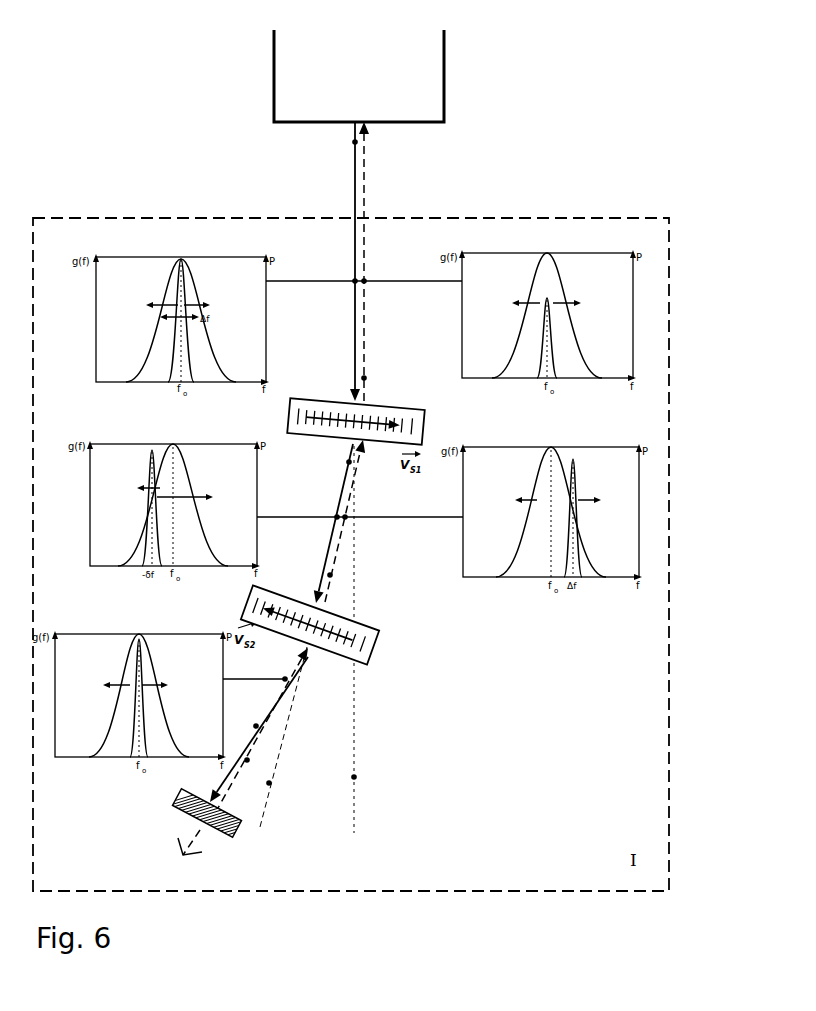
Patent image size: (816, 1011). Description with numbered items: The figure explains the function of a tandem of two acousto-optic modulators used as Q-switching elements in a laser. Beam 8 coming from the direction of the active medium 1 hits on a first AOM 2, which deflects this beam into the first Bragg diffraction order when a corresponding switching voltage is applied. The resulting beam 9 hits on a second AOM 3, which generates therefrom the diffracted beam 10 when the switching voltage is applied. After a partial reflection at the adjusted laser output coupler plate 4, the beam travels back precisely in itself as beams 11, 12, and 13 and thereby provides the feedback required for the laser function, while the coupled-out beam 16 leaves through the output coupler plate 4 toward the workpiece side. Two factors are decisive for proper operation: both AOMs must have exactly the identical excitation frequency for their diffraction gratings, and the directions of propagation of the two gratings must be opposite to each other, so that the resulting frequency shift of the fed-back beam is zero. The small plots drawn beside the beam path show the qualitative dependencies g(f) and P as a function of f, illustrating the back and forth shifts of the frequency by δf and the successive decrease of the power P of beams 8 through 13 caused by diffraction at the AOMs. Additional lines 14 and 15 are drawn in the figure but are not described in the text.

The active medium 1 is at (418, 64).
The beam 8 is at (352, 142).
The beam 13 is at (366, 377).
The first AOM 2 is at (288, 420).
The beam 9 is at (349, 462).
The beam 12 is at (332, 573).
The optical axis 14 is at (356, 776).
The reflected beam 15 is at (271, 782).
The beam 11 is at (249, 758).
The diffracted beam 10 is at (258, 724).
The second AOM 3 is at (250, 608).
The coupled-out beam 16 is at (200, 847).
The laser output coupler plate 4 is at (238, 831).